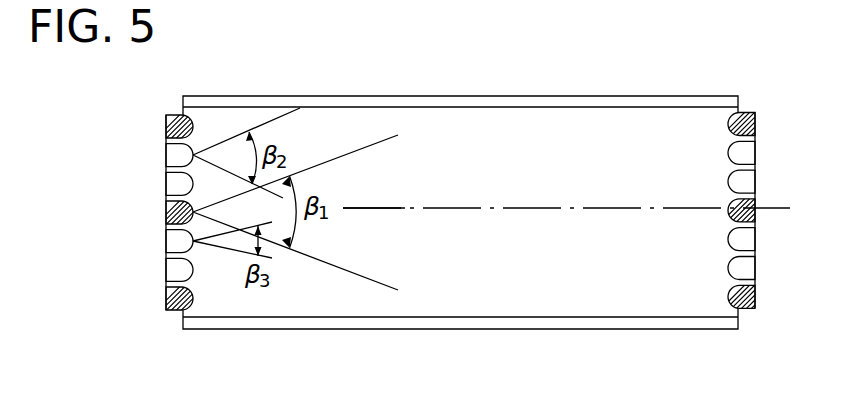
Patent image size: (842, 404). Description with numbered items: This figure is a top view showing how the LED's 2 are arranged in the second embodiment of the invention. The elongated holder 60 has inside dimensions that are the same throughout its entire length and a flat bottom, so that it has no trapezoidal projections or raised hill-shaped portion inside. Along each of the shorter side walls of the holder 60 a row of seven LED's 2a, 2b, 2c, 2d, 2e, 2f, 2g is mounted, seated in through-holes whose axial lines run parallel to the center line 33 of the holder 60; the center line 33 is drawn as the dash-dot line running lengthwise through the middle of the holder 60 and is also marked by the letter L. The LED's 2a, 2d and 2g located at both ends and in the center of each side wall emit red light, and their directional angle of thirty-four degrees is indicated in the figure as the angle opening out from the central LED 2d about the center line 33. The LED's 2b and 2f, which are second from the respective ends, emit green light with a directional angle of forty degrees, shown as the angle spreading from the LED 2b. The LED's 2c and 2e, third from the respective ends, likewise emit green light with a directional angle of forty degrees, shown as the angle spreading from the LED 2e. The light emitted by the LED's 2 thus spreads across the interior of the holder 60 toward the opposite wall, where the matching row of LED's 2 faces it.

The LED's 2 is at (88, 90).
The LED 2a is at (166, 126).
The LED 2b is at (166, 156).
The LED 2c is at (166, 181).
The LED 2d is at (166, 212).
The LED 2e is at (166, 243).
The LED 2f is at (166, 272).
The LED 2g is at (166, 303).
The center line 33 is at (386, 209).
The holder 60 is at (616, 331).
The optical axis L is at (775, 206).